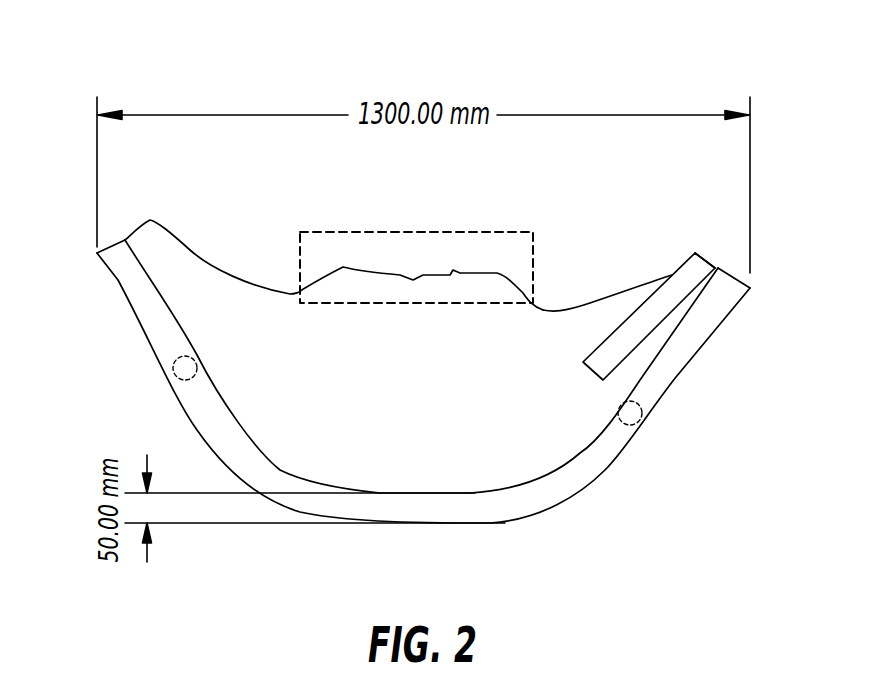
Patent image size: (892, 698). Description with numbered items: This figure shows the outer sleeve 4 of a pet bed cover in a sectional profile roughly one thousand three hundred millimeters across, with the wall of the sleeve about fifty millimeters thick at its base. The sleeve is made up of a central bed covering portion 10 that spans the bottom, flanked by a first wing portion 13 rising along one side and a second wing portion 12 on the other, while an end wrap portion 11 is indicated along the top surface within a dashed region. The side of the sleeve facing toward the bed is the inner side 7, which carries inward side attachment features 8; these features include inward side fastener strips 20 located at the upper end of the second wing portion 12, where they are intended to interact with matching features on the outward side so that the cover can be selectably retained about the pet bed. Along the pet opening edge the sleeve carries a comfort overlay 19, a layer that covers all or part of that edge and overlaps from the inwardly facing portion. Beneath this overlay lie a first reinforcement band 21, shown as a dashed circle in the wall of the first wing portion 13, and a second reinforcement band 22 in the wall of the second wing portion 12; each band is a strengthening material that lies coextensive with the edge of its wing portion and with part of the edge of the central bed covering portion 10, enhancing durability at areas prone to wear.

The outer sleeve 4 is at (596, 44).
The inner side 7 is at (583, 208).
The inward side attachment features 8 is at (734, 240).
The central bed covering portion 10 is at (425, 415).
The end wrap portion 11 is at (300, 232).
The second wing portion 12 is at (588, 331).
The first wing portion 13 is at (255, 326).
The comfort overlay 19 is at (517, 502).
The inward side fastener strips 20 is at (697, 270).
The first reinforcement band 21 is at (174, 368).
The second reinforcement band 22 is at (642, 417).